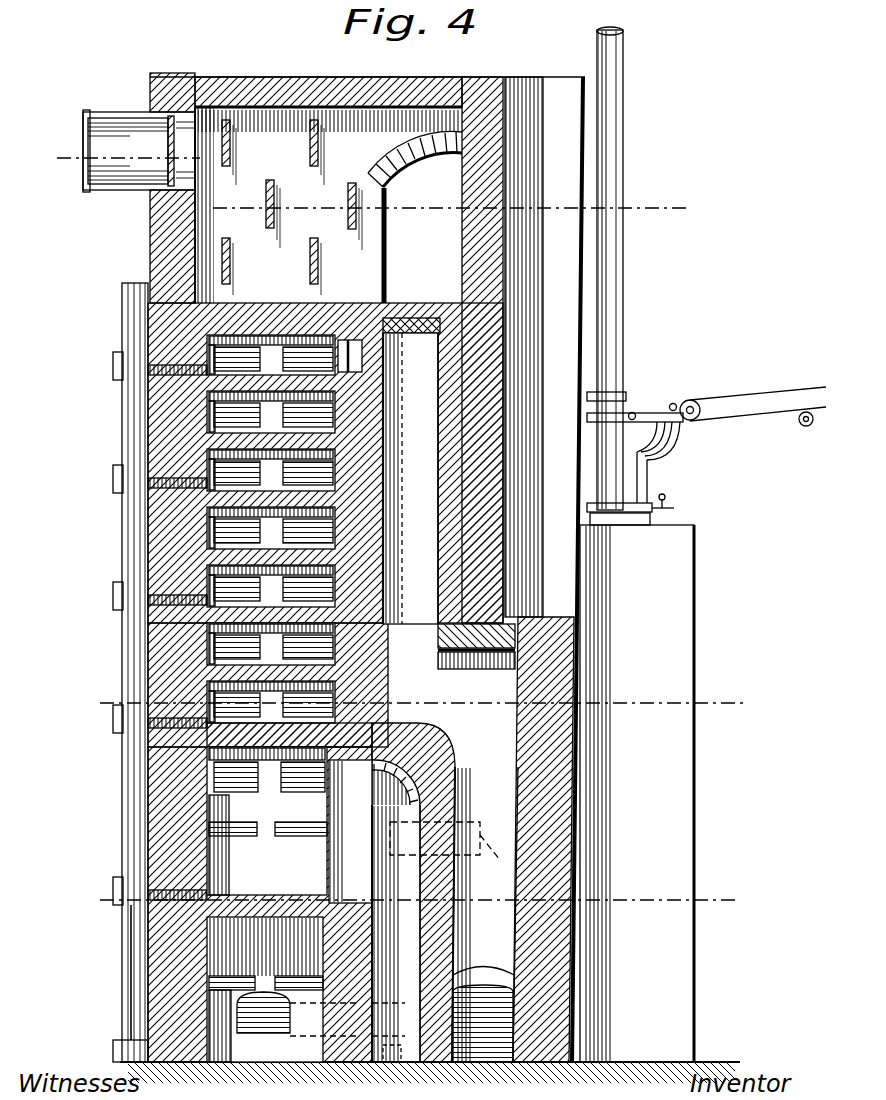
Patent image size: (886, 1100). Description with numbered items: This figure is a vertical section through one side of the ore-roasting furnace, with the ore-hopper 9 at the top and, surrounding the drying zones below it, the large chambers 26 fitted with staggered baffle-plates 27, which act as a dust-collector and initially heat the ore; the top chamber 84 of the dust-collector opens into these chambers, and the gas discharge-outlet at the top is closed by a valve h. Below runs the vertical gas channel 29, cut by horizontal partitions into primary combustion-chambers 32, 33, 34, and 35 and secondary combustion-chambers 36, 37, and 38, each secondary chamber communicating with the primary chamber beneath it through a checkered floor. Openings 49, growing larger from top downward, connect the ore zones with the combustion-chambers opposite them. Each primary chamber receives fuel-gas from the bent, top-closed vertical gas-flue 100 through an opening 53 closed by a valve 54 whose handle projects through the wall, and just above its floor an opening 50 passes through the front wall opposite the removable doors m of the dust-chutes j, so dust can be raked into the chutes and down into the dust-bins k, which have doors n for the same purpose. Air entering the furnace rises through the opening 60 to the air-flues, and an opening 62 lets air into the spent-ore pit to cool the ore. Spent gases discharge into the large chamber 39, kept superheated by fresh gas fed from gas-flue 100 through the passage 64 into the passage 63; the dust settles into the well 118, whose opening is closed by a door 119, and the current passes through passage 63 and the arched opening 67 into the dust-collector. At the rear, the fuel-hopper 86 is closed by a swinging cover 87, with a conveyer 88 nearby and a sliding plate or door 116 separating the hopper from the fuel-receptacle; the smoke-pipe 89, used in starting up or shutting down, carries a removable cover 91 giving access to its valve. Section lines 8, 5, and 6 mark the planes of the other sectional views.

The valve h is at (167, 140).
The ore-hopper 9 is at (86, 192).
The large chambers 26 is at (273, 207).
The staggered baffle-plates 27 is at (347, 206).
The openings 49 is at (304, 336).
The opening 53 is at (352, 332).
The valve 54 is at (392, 312).
The top chamber of the dust-collector 84 is at (409, 245).
The primary combustion-chamber 32 is at (222, 352).
The secondary combustion-chamber 36 is at (207, 420).
The primary combustion-chamber 33 is at (205, 474).
The secondary combustion-chamber 37 is at (215, 541).
The primary combustion-chamber 34 is at (212, 597).
The secondary combustion-chamber 38 is at (208, 694).
The opening 50 is at (172, 486).
The vertical gas-flue 100 is at (456, 802).
The primary combustion-chamber 35 is at (207, 760).
The arched opening 67 is at (380, 800).
The chamber 39 is at (267, 821).
The passage 63 is at (350, 831).
The vertical gas channel 29 is at (265, 989).
The opening 62 is at (207, 978).
The opening 60 is at (262, 1016).
The well 118 is at (398, 933).
The door 119 is at (400, 1063).
The passage 64 is at (454, 914).
The dust-chutes j is at (128, 433).
The removable doors m is at (118, 362).
The dust-bins k is at (125, 1022).
The doors n is at (116, 1050).
The smoke-pipe 89 is at (616, 116).
The removable cover 91 is at (623, 368).
The swinging cover 87 is at (651, 413).
The conveyer 88 is at (782, 384).
The fuel-hopper 86 is at (662, 456).
The sliding plate or door 116 is at (674, 506).
The section line 8 8 is at (50, 95).
The section line 5 5 is at (93, 650).
The section line 6 6 is at (93, 850).